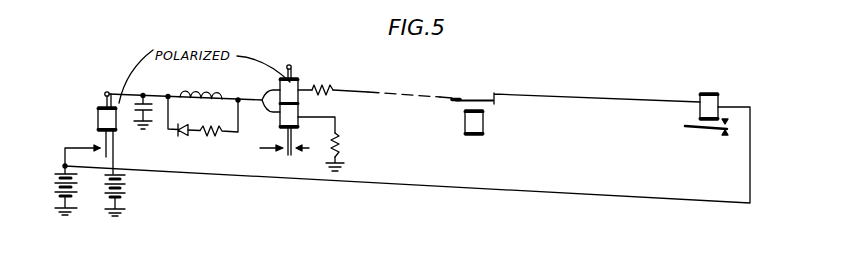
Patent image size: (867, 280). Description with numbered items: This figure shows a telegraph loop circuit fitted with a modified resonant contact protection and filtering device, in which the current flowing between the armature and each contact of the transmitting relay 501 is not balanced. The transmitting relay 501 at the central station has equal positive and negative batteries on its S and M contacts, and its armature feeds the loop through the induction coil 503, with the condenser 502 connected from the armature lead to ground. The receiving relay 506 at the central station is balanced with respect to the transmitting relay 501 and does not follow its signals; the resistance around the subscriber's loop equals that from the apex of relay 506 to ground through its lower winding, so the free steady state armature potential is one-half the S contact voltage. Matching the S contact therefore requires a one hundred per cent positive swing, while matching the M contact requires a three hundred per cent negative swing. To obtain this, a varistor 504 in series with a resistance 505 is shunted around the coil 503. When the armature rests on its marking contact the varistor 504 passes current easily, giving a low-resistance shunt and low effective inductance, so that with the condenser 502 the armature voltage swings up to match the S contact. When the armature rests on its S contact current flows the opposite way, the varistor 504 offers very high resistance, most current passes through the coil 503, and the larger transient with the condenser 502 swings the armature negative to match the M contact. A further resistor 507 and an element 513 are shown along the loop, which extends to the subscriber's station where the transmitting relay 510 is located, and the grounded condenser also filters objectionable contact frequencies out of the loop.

The transmitting relay 501 is at (98, 119).
The condenser 502 is at (148, 107).
The induction coil 503 is at (196, 91).
The varistor 504 is at (180, 138).
The resistance 505 is at (205, 138).
The receiving relay 506 is at (295, 81).
The resistor 507 is at (328, 97).
The transmitting relay 510 is at (700, 110).
The relay 513 is at (480, 117).